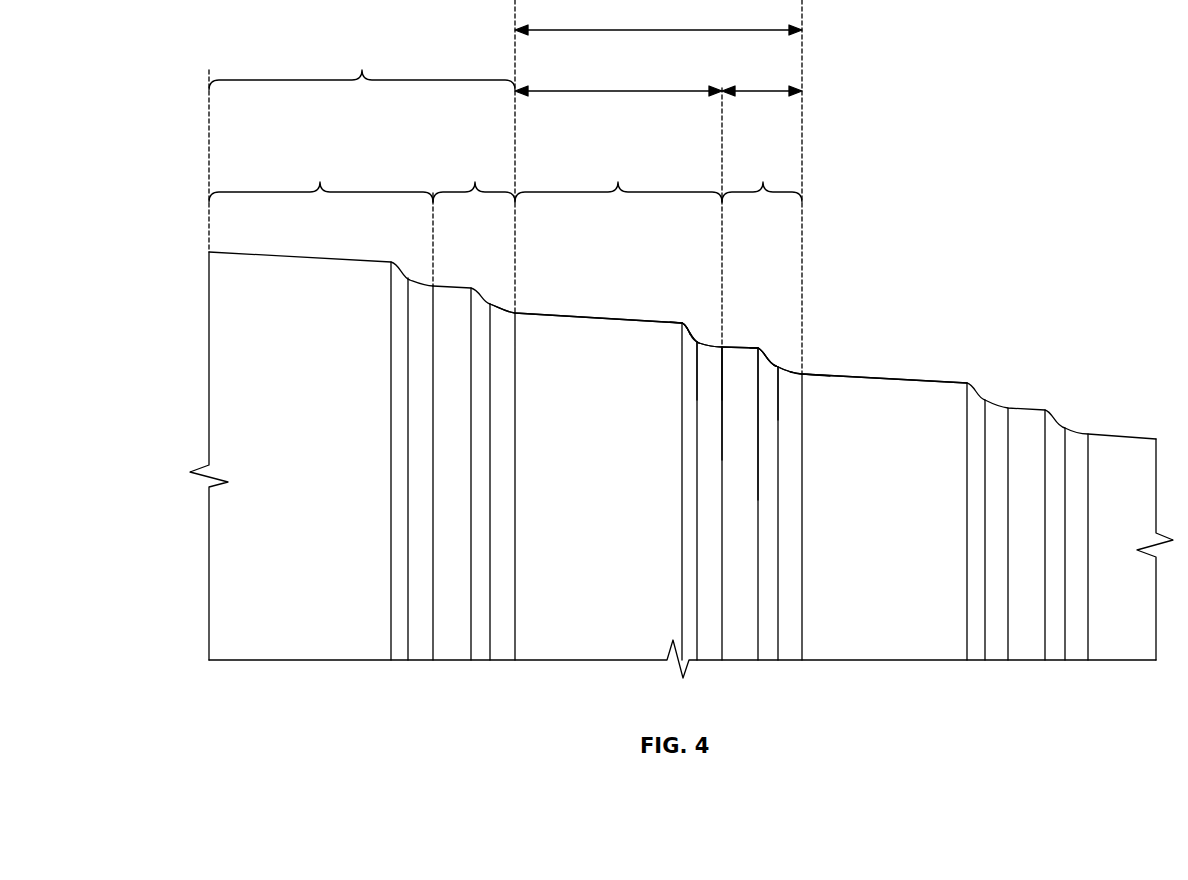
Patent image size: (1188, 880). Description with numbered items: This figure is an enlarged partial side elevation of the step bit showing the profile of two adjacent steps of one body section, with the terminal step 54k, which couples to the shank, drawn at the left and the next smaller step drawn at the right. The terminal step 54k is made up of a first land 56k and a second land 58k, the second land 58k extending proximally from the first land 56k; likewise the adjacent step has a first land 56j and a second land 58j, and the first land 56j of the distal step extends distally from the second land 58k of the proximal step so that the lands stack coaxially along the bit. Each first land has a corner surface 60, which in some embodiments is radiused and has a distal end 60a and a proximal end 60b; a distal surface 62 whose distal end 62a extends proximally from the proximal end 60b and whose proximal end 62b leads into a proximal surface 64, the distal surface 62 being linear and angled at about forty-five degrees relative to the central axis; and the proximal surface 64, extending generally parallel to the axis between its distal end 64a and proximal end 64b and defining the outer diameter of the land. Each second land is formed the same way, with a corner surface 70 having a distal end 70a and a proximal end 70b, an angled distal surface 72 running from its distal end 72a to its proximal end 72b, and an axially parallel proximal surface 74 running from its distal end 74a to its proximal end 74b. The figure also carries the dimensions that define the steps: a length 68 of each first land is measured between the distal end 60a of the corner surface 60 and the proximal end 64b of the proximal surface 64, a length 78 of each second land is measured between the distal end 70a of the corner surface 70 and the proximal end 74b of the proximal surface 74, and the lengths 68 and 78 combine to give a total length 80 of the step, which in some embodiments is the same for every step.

The terminal step 54k is at (362, 64).
The second land of the terminal step 58k is at (321, 175).
The first land of the terminal step 56k is at (474, 175).
The second land of step 54j 58j is at (618, 175).
The first land of step 54j 56j is at (762, 175).
The total length 80 is at (628, 28).
The length of second land 78 is at (582, 90).
The length of first land 68 is at (742, 90).
The proximal surface of second land 74 is at (545, 312).
The distal end of proximal surface 74 74a is at (681, 323).
The proximal end of proximal surface 74 74b is at (516, 311).
The distal surface of second land 72 is at (688, 328).
The distal end of distal surface 72 72a is at (696, 342).
The proximal end of distal surface 72 72b is at (681, 325).
The corner surface of second land 70 is at (703, 341).
The distal end of corner surface 70 70a is at (722, 348).
The proximal end of corner surface 70 70b is at (698, 346).
The proximal surface of first land 64 is at (742, 346).
The distal end of proximal surface 64 64a is at (762, 350).
The proximal end of proximal surface 64 64b is at (722, 344).
The distal surface of first land 62 is at (772, 357).
The distal end of distal surface 62 62a is at (780, 368).
The proximal end of distal surface 62 62b is at (758, 349).
The corner surface of first land 60 is at (796, 372).
The distal end of corner surface 60 60a is at (806, 374).
The proximal end of corner surface 60 60b is at (784, 369).